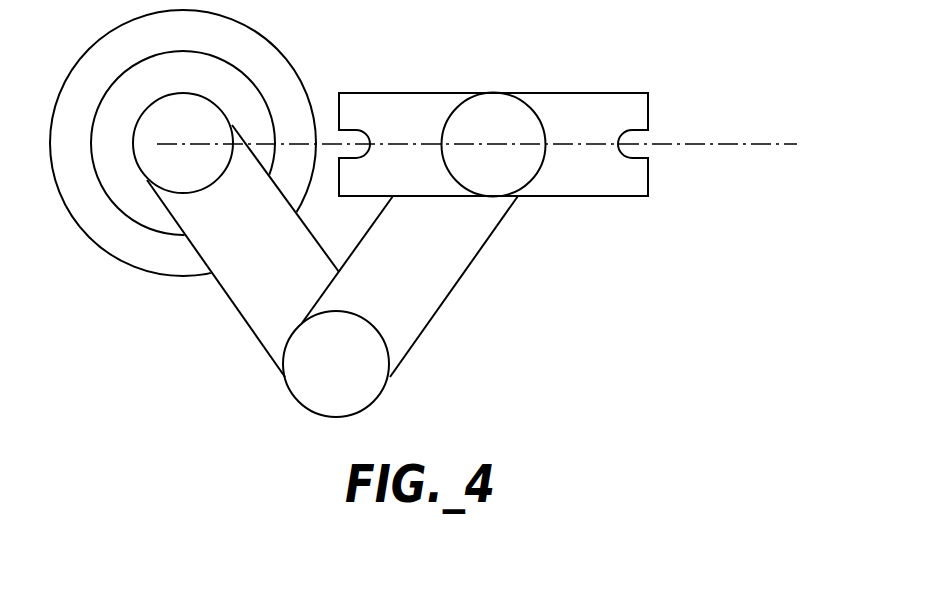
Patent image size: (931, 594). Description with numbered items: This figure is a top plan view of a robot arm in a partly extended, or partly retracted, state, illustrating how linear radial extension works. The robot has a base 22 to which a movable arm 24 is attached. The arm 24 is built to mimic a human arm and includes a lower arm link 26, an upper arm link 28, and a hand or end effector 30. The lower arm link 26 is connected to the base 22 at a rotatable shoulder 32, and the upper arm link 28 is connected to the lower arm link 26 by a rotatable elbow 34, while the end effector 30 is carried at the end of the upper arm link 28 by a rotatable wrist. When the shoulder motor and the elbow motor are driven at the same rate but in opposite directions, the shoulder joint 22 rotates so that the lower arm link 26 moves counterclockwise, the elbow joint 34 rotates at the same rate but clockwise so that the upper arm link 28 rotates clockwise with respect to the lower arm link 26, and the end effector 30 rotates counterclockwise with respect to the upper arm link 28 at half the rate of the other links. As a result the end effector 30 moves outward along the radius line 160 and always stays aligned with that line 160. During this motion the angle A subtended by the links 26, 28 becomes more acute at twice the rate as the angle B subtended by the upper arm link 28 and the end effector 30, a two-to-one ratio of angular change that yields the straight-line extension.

The base 22 is at (152, 272).
The movable arm 24 is at (332, 260).
The lower arm link 26 is at (268, 312).
The upper arm link 28 is at (453, 263).
The end effector 30 is at (577, 110).
The rotatable shoulder 32 is at (180, 110).
The rotatable elbow 34 is at (345, 380).
The radius line 160 is at (710, 143).
The angle subtended by the lower and upper arm links A is at (338, 255).
The angle subtended by the upper arm link and the end effector B is at (529, 210).